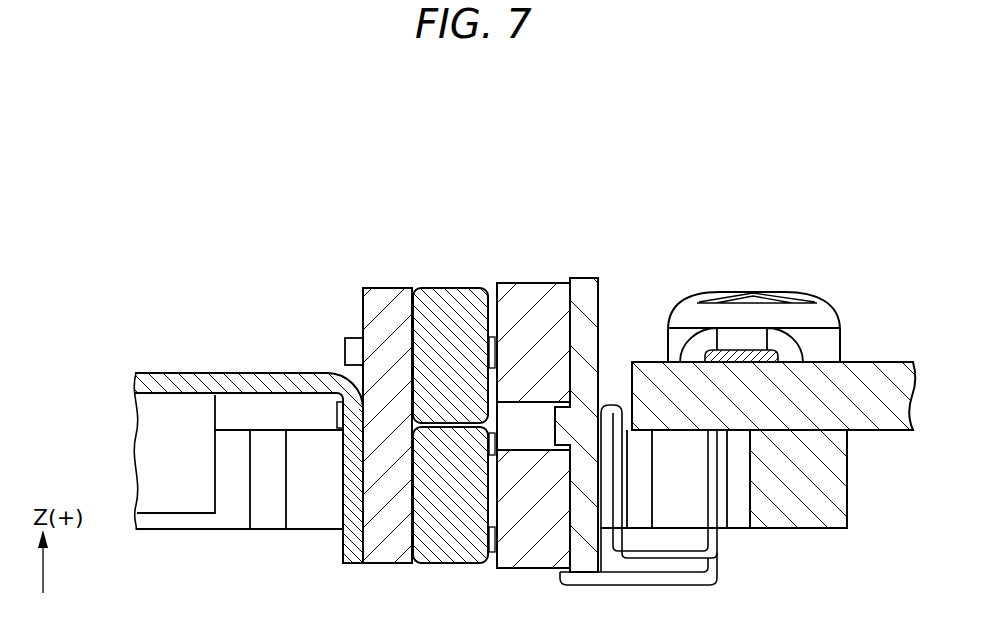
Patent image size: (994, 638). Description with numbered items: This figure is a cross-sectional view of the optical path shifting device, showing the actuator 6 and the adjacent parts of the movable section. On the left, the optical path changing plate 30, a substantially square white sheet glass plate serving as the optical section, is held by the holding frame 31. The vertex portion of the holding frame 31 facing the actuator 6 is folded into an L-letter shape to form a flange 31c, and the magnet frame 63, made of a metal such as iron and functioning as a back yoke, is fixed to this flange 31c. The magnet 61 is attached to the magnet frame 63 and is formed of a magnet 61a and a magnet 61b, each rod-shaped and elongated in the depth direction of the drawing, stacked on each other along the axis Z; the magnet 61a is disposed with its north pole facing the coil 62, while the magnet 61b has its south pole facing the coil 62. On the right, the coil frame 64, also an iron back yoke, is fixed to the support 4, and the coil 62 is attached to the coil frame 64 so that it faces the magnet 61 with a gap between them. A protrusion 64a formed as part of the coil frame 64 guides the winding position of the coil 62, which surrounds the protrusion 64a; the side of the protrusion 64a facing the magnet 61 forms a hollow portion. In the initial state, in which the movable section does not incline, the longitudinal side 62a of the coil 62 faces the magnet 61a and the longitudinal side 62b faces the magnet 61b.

The support 4 is at (886, 372).
The actuator 6 is at (569, 137).
The optical path changing plate 30 is at (147, 431).
The holding frame 31 is at (217, 381).
The flange 31c is at (345, 481).
The magnet 61 is at (487, 228).
The magnet 61a is at (461, 298).
The magnet 61b is at (407, 457).
The coil 62 is at (593, 228).
The longitudinal side of the coil 62a is at (540, 291).
The longitudinal side of the coil 62b is at (512, 457).
The magnet frame 63 is at (387, 298).
The coil frame 64 is at (587, 290).
The protrusion 64a is at (553, 432).